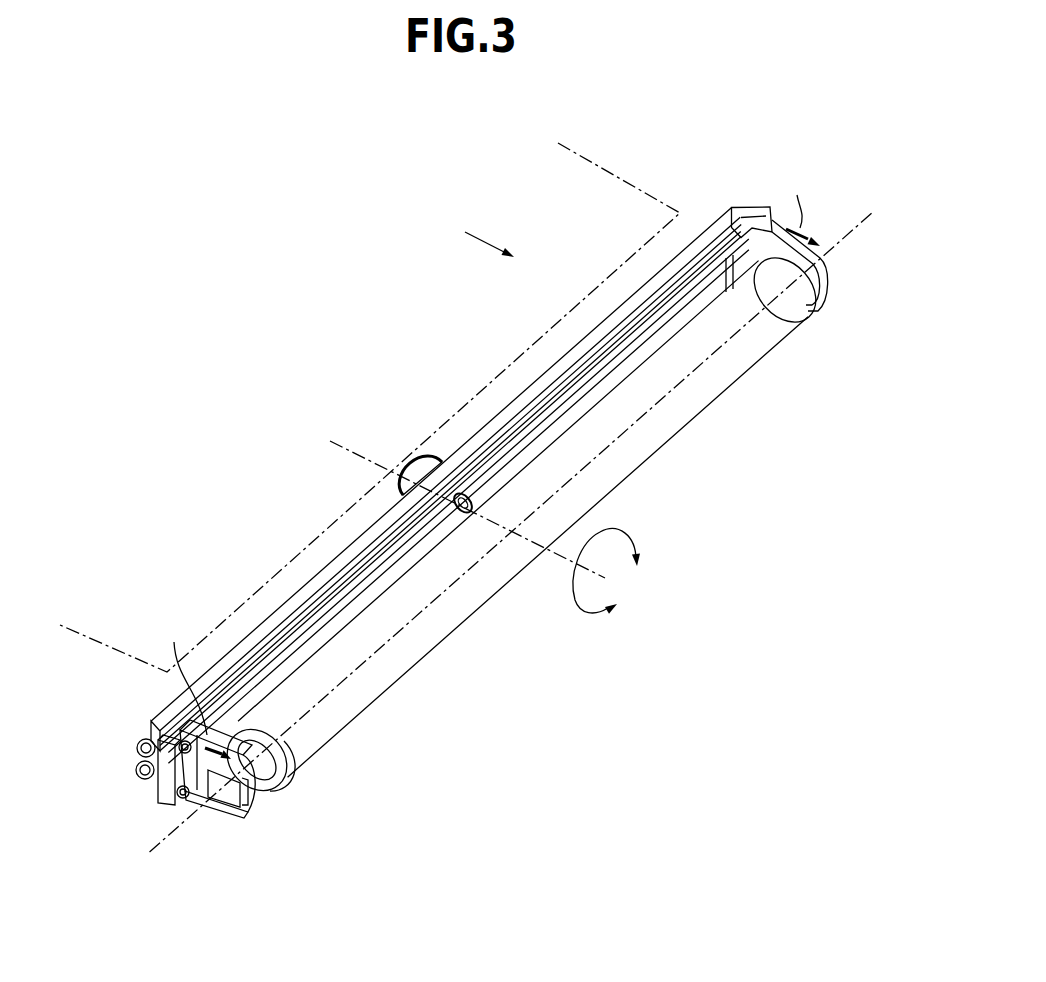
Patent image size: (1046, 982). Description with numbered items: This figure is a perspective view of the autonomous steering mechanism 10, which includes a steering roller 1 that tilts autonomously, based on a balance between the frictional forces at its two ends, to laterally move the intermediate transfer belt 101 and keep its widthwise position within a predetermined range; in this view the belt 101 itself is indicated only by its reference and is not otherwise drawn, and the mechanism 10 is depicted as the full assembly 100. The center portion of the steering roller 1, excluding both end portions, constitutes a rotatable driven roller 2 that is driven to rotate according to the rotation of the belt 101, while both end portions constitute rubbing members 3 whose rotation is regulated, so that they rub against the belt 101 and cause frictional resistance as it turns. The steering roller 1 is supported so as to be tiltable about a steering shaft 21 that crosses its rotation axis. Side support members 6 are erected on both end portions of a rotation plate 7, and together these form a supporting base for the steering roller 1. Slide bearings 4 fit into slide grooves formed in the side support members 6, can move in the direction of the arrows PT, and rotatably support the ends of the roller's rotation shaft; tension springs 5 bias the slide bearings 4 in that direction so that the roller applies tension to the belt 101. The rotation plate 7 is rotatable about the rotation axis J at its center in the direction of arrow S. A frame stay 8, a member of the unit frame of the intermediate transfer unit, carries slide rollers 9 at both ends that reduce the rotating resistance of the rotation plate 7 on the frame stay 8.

The photosensitive member unit 100 is at (358, 231).
The intermediate transfer belt 101 is at (598, 183).
The steering roller 1 is at (742, 432).
The driven roller 2 is at (642, 453).
The rubbing members 3 is at (817, 309).
The slide bearings 4 is at (227, 793).
The tension springs 5 is at (203, 765).
The side support members 6 is at (245, 810).
The rotation plate 7 is at (153, 796).
The frame stay 8 is at (270, 622).
The slide rollers 9 is at (140, 746).
The autonomous steering mechanism 10 is at (472, 665).
The steering shaft 21 is at (462, 498).